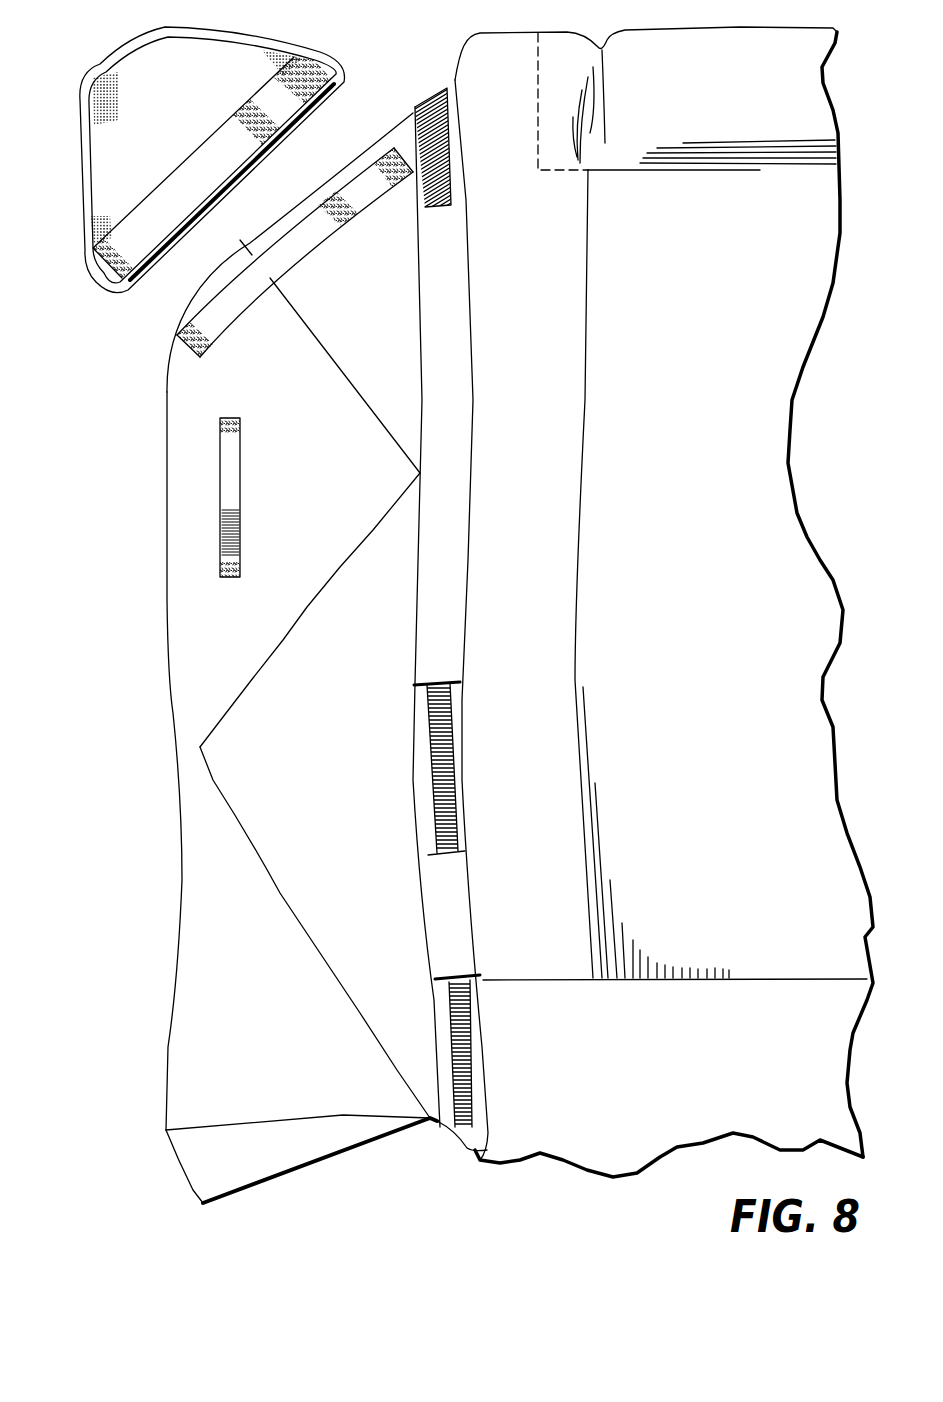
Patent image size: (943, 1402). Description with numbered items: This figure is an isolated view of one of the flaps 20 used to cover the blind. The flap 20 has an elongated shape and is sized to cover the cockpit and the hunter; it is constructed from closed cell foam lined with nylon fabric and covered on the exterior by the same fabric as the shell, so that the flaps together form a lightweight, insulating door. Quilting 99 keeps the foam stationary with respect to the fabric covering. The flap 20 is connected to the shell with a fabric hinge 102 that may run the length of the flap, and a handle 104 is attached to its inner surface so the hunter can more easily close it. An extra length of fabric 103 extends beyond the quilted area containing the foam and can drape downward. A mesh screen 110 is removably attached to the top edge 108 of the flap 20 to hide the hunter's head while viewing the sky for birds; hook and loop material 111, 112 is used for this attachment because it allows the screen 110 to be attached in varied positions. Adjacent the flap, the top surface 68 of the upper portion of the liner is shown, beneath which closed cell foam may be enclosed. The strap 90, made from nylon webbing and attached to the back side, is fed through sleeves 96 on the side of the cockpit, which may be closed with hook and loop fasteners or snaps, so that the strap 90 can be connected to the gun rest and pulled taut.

The flap 20 is at (193, 943).
The top surface 68 is at (709, 312).
The strap 90 is at (450, 803).
The sleeves 96 is at (462, 915).
The quilting 99 is at (253, 678).
The fabric hinge 102 is at (417, 600).
The extra length of fabric 103 is at (193, 1157).
The handle 104 is at (230, 471).
The top edge 108 is at (343, 168).
The mesh screen 110 is at (167, 93).
The hook and loop material 111 is at (305, 237).
The hook and loop material 112 is at (130, 237).